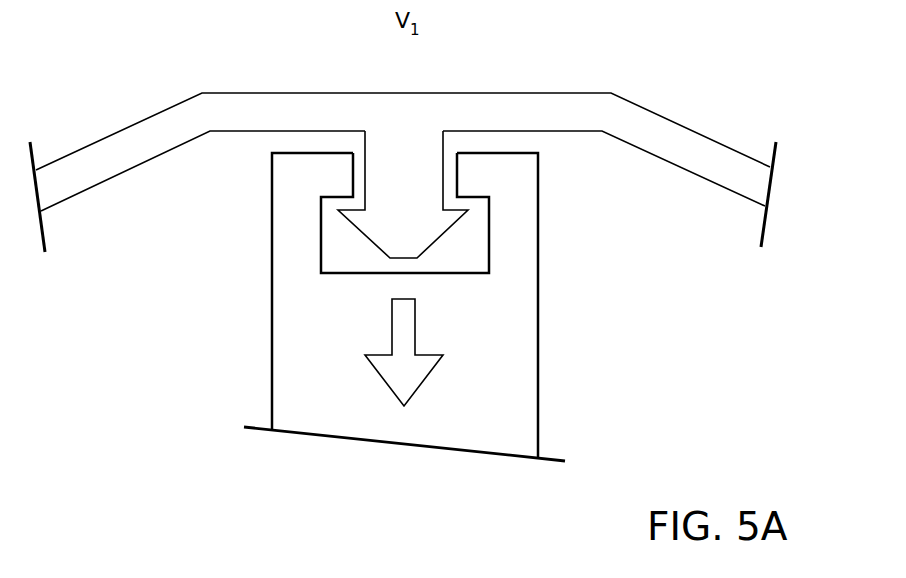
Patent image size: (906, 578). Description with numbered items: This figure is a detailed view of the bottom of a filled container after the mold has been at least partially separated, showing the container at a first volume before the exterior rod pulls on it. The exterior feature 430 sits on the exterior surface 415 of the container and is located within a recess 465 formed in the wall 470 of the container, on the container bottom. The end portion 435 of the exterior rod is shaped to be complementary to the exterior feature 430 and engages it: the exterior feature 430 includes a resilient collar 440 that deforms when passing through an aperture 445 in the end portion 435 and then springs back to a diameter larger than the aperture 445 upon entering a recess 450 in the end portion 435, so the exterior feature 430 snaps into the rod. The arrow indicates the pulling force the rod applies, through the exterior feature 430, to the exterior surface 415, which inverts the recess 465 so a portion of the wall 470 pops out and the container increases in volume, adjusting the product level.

The exterior surface 415 is at (241, 131).
The exterior feature 430 is at (443, 235).
The end portion 435 is at (538, 302).
The resilient collar 440 is at (357, 230).
The aperture 445 is at (457, 175).
The recess 450 is at (460, 273).
The recess 465 is at (136, 262).
The wall 470 is at (646, 108).